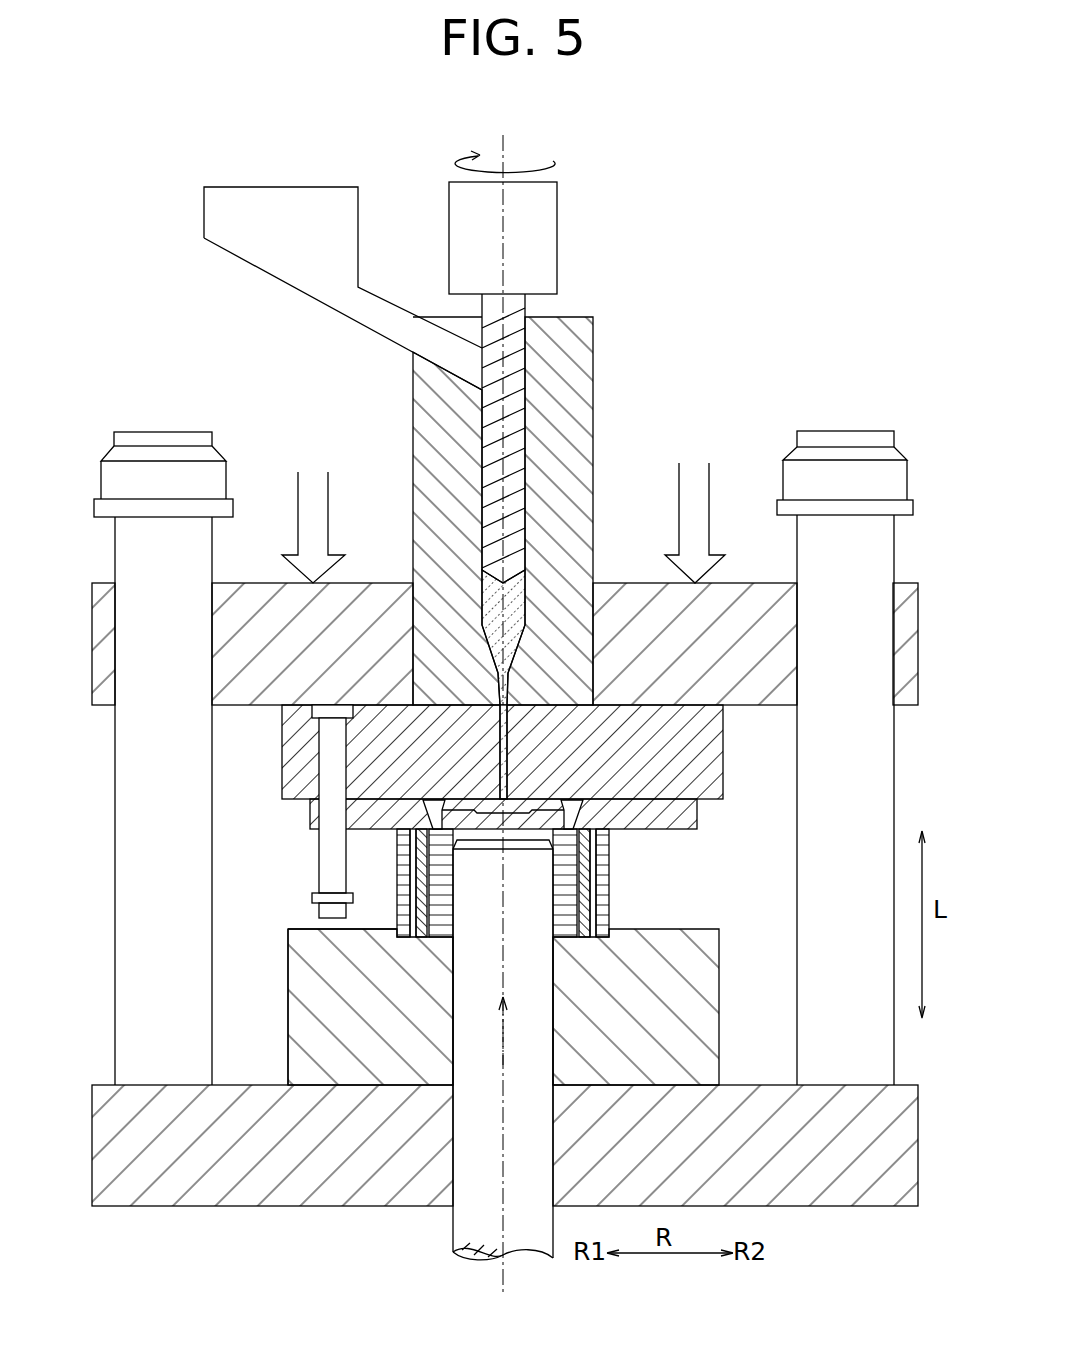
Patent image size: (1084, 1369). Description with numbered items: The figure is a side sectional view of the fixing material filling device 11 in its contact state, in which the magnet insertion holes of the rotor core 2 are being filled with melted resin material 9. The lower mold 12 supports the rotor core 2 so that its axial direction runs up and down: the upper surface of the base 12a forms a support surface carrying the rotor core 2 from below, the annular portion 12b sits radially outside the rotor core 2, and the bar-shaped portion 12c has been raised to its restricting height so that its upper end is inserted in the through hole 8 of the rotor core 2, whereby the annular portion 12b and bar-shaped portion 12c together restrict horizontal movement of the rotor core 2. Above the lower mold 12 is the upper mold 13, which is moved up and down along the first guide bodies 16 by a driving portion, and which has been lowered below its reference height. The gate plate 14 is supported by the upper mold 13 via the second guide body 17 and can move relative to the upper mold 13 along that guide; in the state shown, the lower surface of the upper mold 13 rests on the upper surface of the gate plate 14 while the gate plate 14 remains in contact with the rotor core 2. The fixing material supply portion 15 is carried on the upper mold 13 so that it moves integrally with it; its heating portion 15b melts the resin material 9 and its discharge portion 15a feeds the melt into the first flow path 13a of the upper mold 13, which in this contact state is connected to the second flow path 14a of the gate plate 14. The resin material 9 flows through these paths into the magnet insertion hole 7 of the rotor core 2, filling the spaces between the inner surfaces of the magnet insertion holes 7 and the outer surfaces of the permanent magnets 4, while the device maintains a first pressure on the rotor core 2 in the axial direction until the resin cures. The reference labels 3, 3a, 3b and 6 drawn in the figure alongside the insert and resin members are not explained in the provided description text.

The rotor core 2 is at (608, 838).
The insert member 3 is at (397, 857).
The cylindrical portion of insert member 3a is at (413, 883).
The shaft portion of insert member 3b is at (515, 955).
The permanent magnet 4 is at (400, 840).
The resin 6 is at (488, 600).
The magnet insertion hole 7 is at (492, 883).
The through hole 8 is at (624, 1050).
The resin material 9 is at (514, 725).
The fixing material filling device 11 is at (163, 102).
The lower mold 12 is at (720, 1005).
The base 12a is at (288, 1028).
The annular portion 12b is at (312, 929).
The bar-shaped portion 12c is at (472, 972).
The upper mold 13 is at (723, 718).
The first flow path 13a is at (512, 745).
The gate plate 14 is at (698, 810).
The second flow path 14a is at (430, 815).
The fixing material supply portion 15 is at (622, 322).
The discharge portion 15a is at (505, 580).
The heating portion 15b is at (427, 413).
The first guide body 16 is at (130, 762).
The second guide body 17 is at (318, 749).